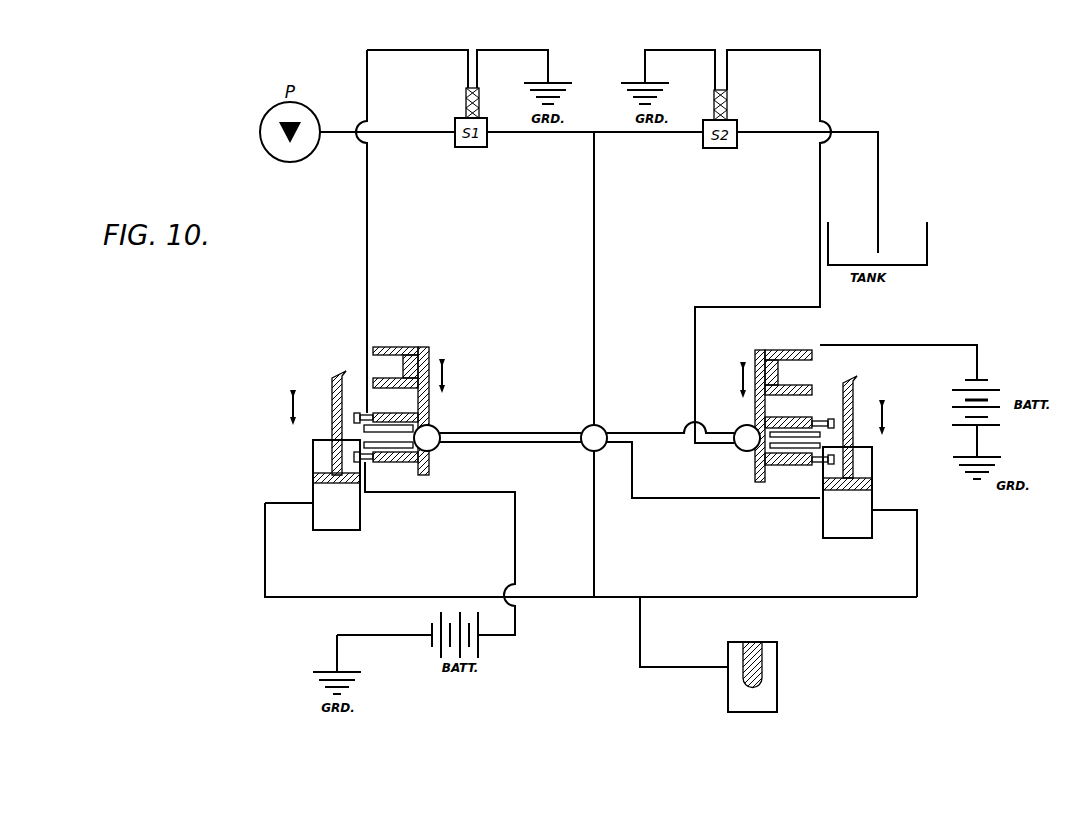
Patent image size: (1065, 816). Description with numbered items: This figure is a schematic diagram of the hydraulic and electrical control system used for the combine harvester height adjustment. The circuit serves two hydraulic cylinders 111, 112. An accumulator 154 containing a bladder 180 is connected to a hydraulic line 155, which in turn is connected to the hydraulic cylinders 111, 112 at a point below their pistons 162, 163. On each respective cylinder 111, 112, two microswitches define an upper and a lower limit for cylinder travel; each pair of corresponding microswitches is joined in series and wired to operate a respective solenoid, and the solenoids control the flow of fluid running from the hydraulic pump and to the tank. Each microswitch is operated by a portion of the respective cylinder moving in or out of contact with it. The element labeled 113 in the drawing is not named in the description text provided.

The hydraulic cylinder 111 is at (313, 490).
The hydraulic cylinder 112 is at (872, 480).
The movable switch contact member 113 is at (430, 355).
The accumulator 154 is at (777, 712).
The hydraulic line 155 is at (265, 597).
The piston 162 is at (332, 406).
The piston 163 is at (853, 432).
The bladder 180 is at (763, 683).